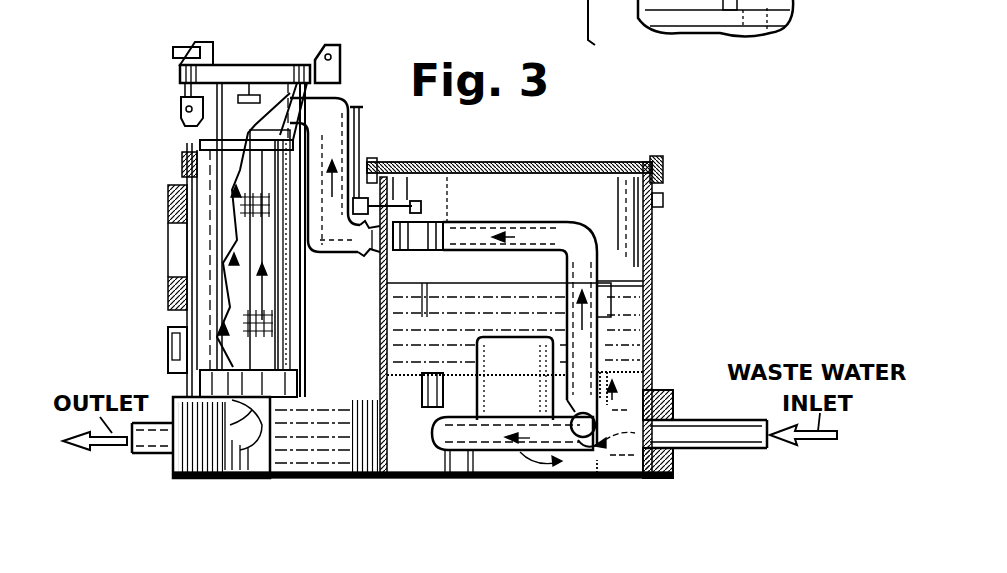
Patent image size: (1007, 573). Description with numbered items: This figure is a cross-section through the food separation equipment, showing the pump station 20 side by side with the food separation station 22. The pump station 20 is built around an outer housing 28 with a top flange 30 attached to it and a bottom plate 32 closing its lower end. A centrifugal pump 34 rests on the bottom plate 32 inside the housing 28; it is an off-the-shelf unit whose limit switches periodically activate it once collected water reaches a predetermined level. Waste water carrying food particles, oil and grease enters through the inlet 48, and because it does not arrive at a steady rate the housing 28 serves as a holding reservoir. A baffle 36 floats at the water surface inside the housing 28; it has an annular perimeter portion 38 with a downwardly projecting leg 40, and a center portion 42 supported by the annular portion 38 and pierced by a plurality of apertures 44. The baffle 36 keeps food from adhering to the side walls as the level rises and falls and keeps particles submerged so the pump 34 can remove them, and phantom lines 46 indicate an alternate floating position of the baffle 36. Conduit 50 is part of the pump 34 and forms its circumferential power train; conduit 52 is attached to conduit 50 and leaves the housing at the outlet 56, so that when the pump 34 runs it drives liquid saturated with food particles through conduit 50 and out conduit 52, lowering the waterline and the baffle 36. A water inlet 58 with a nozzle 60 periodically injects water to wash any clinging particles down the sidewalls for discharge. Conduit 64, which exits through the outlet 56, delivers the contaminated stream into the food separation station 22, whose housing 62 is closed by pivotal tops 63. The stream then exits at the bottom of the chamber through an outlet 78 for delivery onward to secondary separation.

The pump station 20 is at (662, 235).
The food separation station 22 is at (165, 172).
The outer housing 28 is at (652, 308).
The top flange 30 is at (615, 162).
The bottom plate 32 is at (421, 478).
The centrifugal pump 34 is at (497, 400).
The baffle 36 is at (620, 387).
The annular perimeter portion 38 is at (400, 352).
The downwardly projecting leg 40 is at (418, 395).
The center portion 42 is at (433, 373).
The apertures 44 is at (403, 373).
The phantom lines 46 is at (618, 280).
The inlet 48 is at (731, 450).
The conduit 50 is at (473, 430).
The conduit 52 is at (600, 340).
The outlet 56 is at (385, 252).
The water inlet 58 is at (362, 140).
The nozzle 60 is at (442, 162).
The housing 62 is at (193, 143).
The pivotal tops 63 is at (240, 63).
The conduit 64 is at (347, 107).
The outlet 78 is at (212, 483).